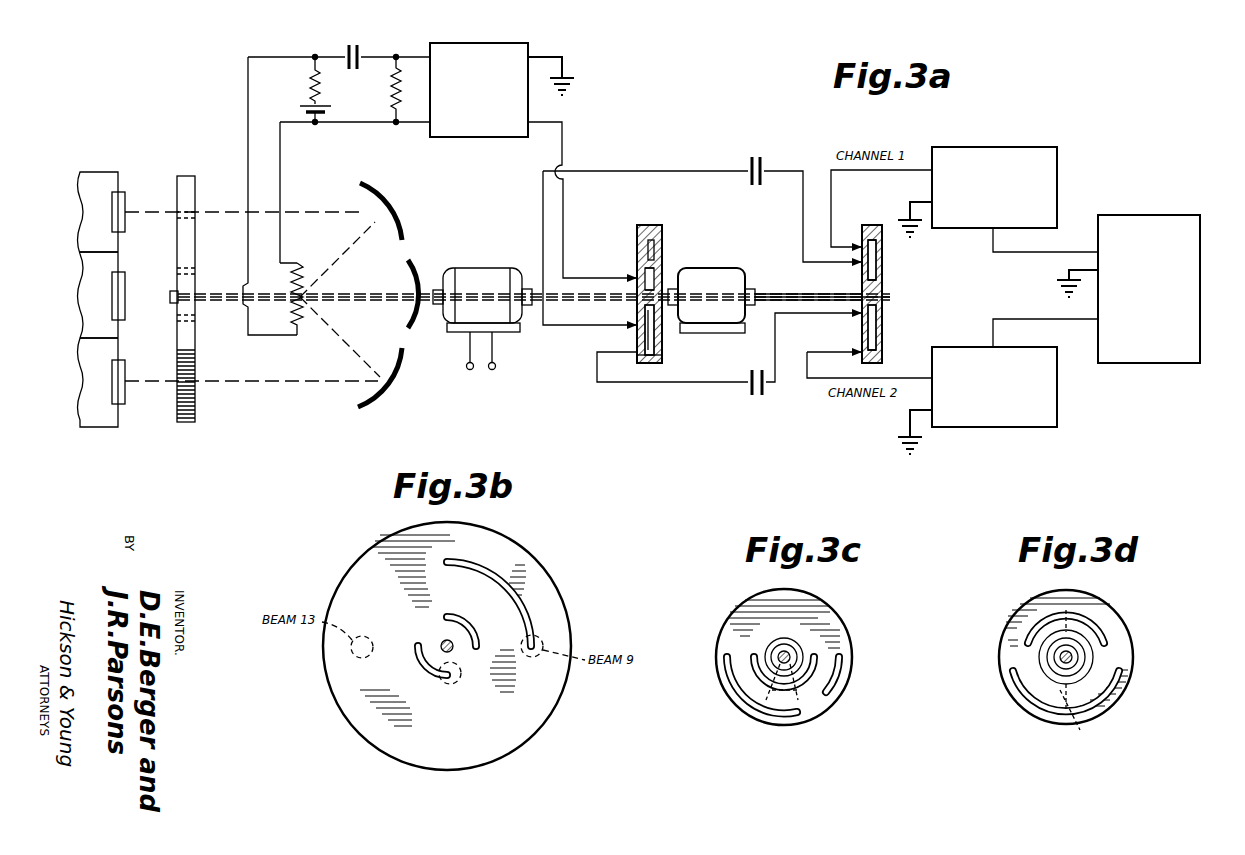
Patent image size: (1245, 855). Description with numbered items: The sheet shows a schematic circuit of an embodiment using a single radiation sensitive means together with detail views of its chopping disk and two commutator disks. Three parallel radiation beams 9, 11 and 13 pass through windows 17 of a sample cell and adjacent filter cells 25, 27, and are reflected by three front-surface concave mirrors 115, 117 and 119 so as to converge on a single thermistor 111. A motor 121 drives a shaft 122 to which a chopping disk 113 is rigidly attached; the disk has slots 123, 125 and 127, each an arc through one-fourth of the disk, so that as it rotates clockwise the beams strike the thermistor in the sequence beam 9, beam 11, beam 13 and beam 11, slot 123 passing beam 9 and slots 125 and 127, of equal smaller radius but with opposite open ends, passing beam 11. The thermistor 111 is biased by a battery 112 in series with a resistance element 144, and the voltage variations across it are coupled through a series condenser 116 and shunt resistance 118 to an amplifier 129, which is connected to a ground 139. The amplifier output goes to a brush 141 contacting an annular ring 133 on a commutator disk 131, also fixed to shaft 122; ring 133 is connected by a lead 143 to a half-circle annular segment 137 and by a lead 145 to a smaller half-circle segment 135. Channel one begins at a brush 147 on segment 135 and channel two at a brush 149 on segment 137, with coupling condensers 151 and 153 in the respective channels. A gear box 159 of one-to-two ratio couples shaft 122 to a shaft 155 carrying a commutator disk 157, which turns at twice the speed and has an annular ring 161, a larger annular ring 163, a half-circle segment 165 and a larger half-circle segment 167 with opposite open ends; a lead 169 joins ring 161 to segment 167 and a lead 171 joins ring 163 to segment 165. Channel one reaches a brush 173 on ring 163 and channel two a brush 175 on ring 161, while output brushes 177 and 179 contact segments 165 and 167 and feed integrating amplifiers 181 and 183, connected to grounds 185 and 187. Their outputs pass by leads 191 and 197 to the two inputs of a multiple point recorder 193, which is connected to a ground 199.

In FIG. 3A, the beam of radiation 9 is at (138, 228).
In FIG. 3A, the beam of radiation 11 is at (128, 292).
In FIG. 3A, the beam of radiation 13 is at (130, 386).
In FIG. 3A, the window 17 is at (125, 196).
In FIG. 3A, the filter cell 25 is at (118, 254).
In FIG. 3A, the filter cell 27 is at (118, 340).
In FIG. 3A, the thermistor 111 is at (297, 335).
In FIG. 3A, the battery 112 is at (320, 114).
In FIG. 3A, the chopping disk 113 is at (195, 410).
In FIG. 3B, the chopping disk 113 is at (565, 613).
In FIG. 3A, the concave mirror 115 is at (400, 218).
In FIG. 3A, the series condenser 116 is at (345, 40).
In FIG. 3A, the concave mirror 117 is at (413, 264).
In FIG. 3A, the shunt resistance 118 is at (390, 92).
In FIG. 3A, the concave mirror 119 is at (385, 392).
In FIG. 3A, the motor 121 is at (470, 268).
In FIG. 3A, the shaft 122 is at (343, 303).
In FIG. 3B, the shaft 122 is at (442, 641).
In FIG. 3C, the shaft 122 is at (779, 652).
In FIG. 3A, the slot 123 is at (195, 216).
In FIG. 3B, the slot 123 is at (493, 569).
In FIG. 3A, the slot 125 is at (195, 272).
In FIG. 3B, the slot 125 is at (462, 623).
In FIG. 3A, the slot 127 is at (195, 318).
In FIG. 3B, the slot 127 is at (418, 662).
In FIG. 3A, the amplifier 129 is at (470, 43).
In FIG. 3A, the commutator disk 131 is at (662, 232).
In FIG. 3C, the commutator disk 131 is at (848, 620).
In FIG. 3A, the annular ring 133 is at (637, 268).
In FIG. 3C, the annular ring 133 is at (797, 650).
In FIG. 3A, the half-circle annular segment 135 is at (640, 345).
In FIG. 3C, the half-circle annular segment 135 is at (814, 660).
In FIG. 3A, the half-circle annular segment 137 is at (660, 365).
In FIG. 3C, the half-circle annular segment 137 is at (728, 678).
In FIG. 3A, the ground 139 is at (572, 74).
In FIG. 3A, the brush 141 is at (622, 272).
In FIG. 3A, the lead 143 is at (662, 262).
In FIG. 3C, the lead 143 is at (805, 700).
In FIG. 3A, the resistance element 144 is at (306, 86).
In FIG. 3A, the lead 145 is at (655, 330).
In FIG. 3C, the lead 145 is at (775, 686).
In FIG. 3A, the brush 147 is at (624, 327).
In FIG. 3A, the brush 149 is at (627, 362).
In FIG. 3A, the coupling condenser 151 is at (762, 162).
In FIG. 3A, the coupling condenser 153 is at (765, 395).
In FIG. 3A, the shaft 155 is at (795, 288).
In FIG. 3D, the shaft 155 is at (1060, 663).
In FIG. 3A, the commutator disk 157 is at (872, 225).
In FIG. 3D, the commutator disk 157 is at (1128, 622).
In FIG. 3A, the gear box 159 is at (735, 268).
In FIG. 3A, the annular ring 161 is at (882, 290).
In FIG. 3A, the annular ring 163 is at (882, 276).
In FIG. 3D, the annular ring 163 is at (1085, 657).
In FIG. 3A, the half-circle annular segment 165 is at (866, 232).
In FIG. 3D, the half-circle annular segment 165 is at (1093, 650).
In FIG. 3A, the half-circle annular segment 167 is at (882, 355).
In FIG. 3D, the half-circle annular segment 167 is at (1105, 698).
In FIG. 3A, the lead 169 is at (882, 330).
In FIG. 3D, the lead 169 is at (1080, 730).
In FIG. 3A, the lead 171 is at (882, 258).
In FIG. 3D, the lead 171 is at (1078, 620).
In FIG. 3A, the brush 173 is at (848, 266).
In FIG. 3A, the brush 175 is at (850, 318).
In FIG. 3A, the brush 177 is at (850, 246).
In FIG. 3A, the brush 179 is at (852, 356).
In FIG. 3A, the integrating amplifier 181 is at (1057, 165).
In FIG. 3A, the integrating amplifier 183 is at (1020, 427).
In FIG. 3A, the ground 185 is at (915, 238).
In FIG. 3A, the ground 187 is at (914, 454).
In FIG. 3A, the lead 191 is at (1030, 258).
In FIG. 3A, the multiple point recorder 193 is at (1140, 215).
In FIG. 3A, the lead 197 is at (1030, 312).
In FIG. 3A, the ground 199 is at (1069, 300).